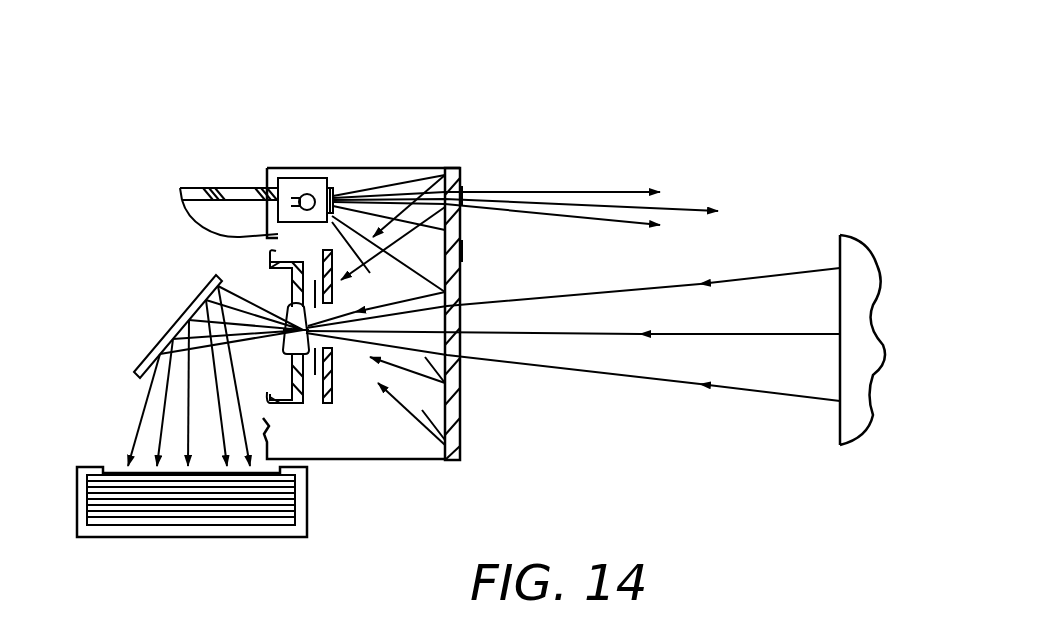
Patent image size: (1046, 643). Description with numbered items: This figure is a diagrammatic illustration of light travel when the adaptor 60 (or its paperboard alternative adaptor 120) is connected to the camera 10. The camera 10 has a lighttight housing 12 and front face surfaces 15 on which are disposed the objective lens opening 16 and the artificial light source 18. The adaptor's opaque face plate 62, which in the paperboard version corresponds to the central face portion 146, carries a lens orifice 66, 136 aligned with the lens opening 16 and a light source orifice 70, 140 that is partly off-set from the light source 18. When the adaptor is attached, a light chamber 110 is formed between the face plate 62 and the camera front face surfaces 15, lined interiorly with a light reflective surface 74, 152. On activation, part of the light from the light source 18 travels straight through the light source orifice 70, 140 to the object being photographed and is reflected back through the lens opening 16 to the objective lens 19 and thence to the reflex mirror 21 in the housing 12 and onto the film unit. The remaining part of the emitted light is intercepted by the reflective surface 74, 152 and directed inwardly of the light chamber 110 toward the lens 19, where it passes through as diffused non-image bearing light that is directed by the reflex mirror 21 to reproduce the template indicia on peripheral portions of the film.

The camera 10 is at (107, 158).
The lighttight housing 12 is at (230, 187).
The artificial light source 18 is at (297, 187).
The light chamber 110 is at (367, 157).
The adaptor 60 is at (515, 287).
The alternative adaptor 120 is at (478, 156).
The light source orifice 70 is at (525, 192).
The light source orifice 140 is at (463, 196).
The face plate 62 is at (521, 247).
The central face portion 146 is at (464, 253).
The lens orifice 66 is at (573, 334).
The lens orifice 136 is at (463, 307).
The light reflective surface 74 is at (434, 428).
The light reflective surface 152 is at (447, 412).
The objective lens opening 16 is at (336, 306).
The front face surfaces 15 is at (334, 382).
The objective lens 19 is at (290, 316).
The reflex mirror 21 is at (179, 322).